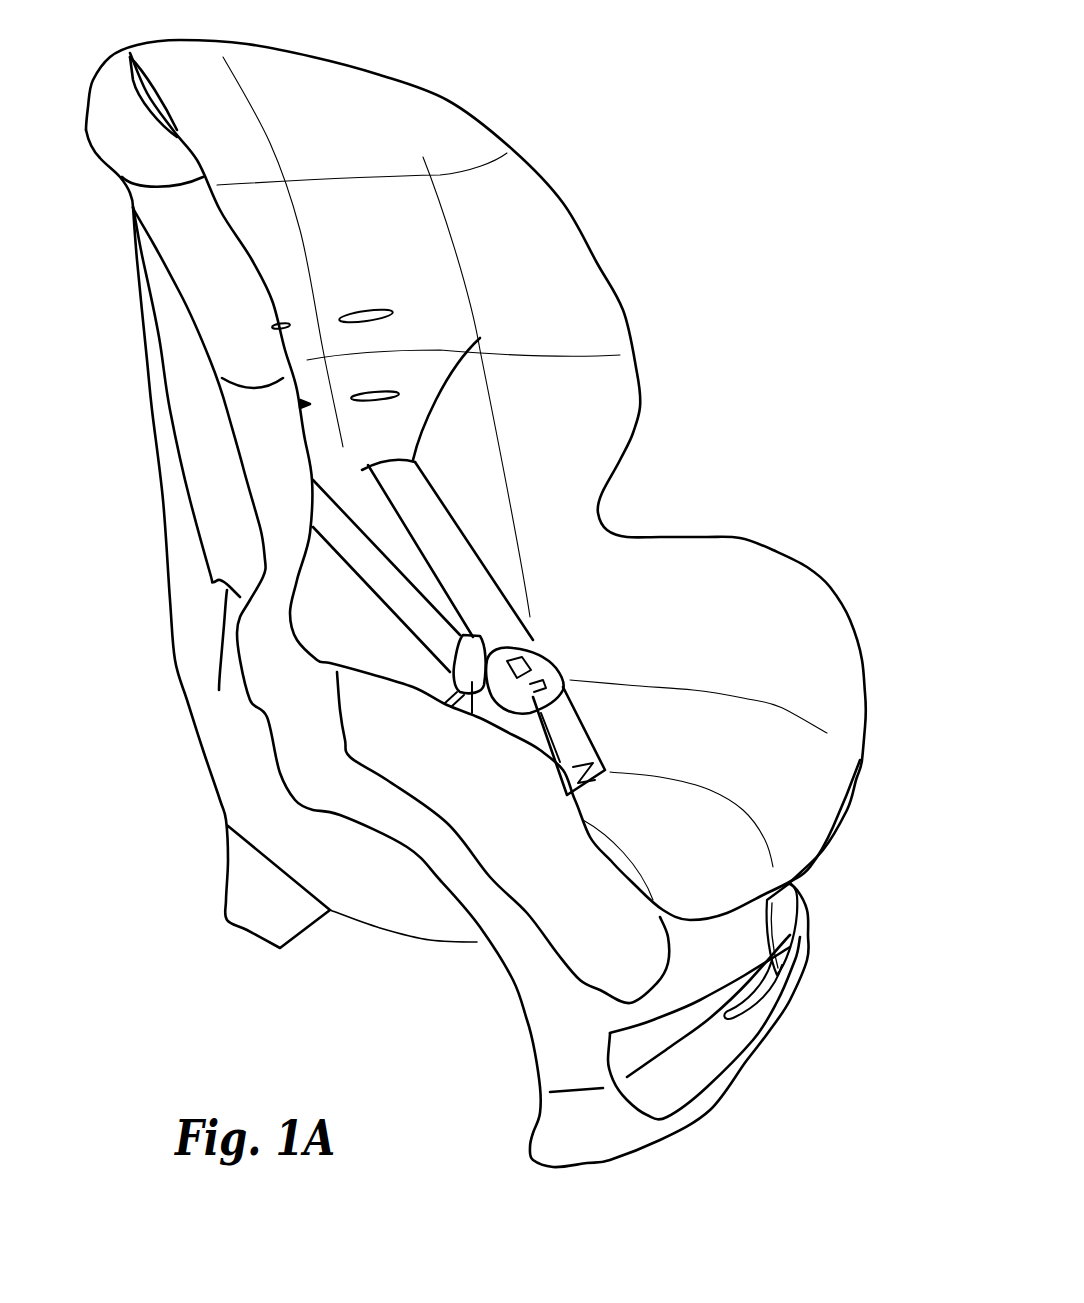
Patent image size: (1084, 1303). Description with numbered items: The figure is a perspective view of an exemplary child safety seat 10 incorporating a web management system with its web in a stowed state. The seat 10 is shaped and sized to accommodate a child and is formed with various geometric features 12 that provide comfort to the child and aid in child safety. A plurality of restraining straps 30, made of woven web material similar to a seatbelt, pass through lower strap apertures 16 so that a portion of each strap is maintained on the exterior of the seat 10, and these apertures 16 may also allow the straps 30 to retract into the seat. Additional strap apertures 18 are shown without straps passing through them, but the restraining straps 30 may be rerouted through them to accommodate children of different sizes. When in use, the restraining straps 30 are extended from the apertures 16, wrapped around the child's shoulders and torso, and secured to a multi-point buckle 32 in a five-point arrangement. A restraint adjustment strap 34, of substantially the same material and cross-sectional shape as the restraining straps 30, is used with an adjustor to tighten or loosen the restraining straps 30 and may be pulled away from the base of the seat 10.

The child safety seat 10 is at (737, 174).
The geometric features 12 is at (560, 220).
The lower strap apertures 16 is at (311, 483).
The additional strap apertures 18 is at (277, 311).
The restraining straps 30 is at (387, 580).
The multi-point buckle 32 is at (540, 630).
The restraint adjustment strap 34 is at (783, 930).